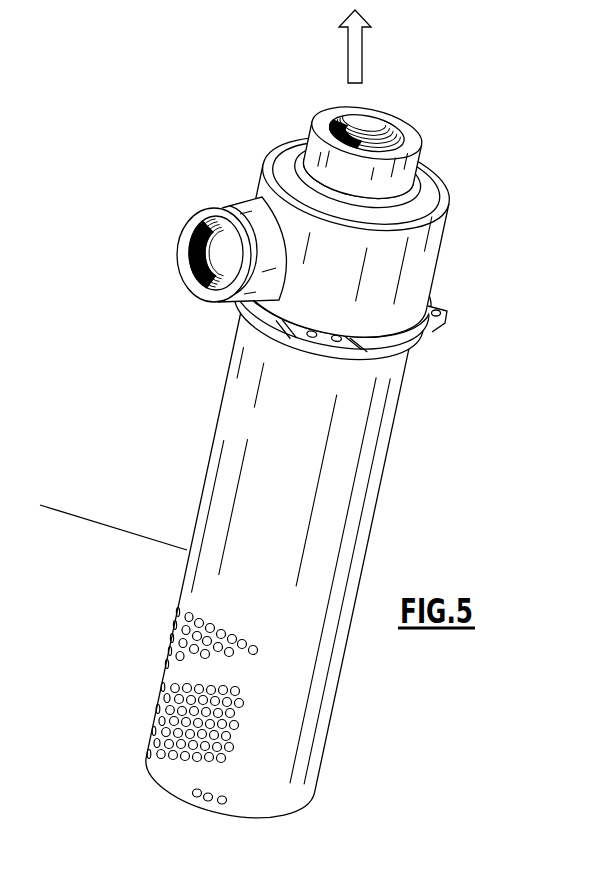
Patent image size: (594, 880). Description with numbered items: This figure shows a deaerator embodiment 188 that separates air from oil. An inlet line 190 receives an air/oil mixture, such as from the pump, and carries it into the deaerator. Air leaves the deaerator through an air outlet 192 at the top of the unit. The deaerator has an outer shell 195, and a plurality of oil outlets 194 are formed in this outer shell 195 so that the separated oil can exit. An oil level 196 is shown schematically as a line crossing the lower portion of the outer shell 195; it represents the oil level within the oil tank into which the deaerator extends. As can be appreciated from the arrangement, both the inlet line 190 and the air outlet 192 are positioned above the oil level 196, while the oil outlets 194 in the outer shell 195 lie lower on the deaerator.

The deaerator embodiment 188 is at (341, 421).
The inlet line 190 is at (215, 250).
The air outlet 192 is at (350, 127).
The oil outlets 194 is at (177, 613).
The outer shell 195 is at (355, 428).
The oil level 196 is at (100, 520).